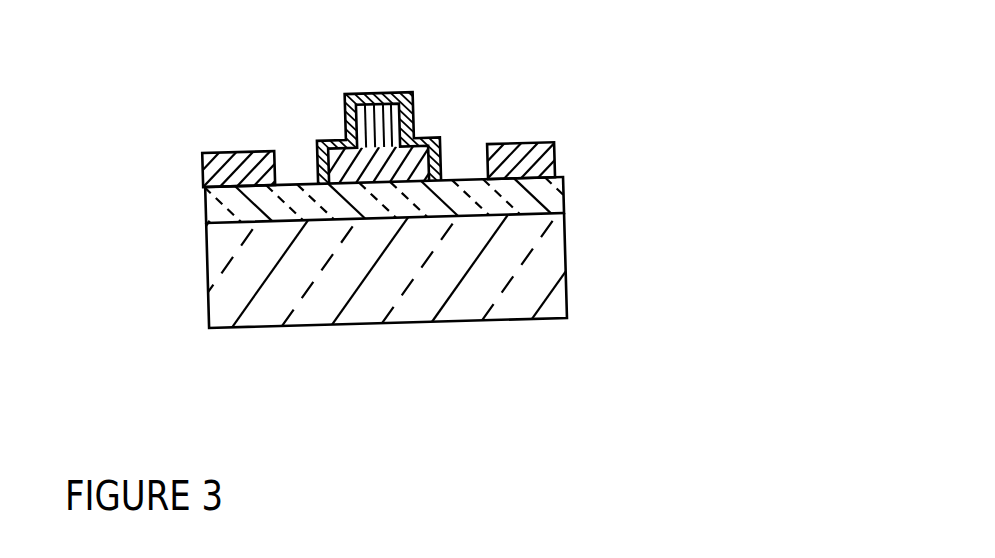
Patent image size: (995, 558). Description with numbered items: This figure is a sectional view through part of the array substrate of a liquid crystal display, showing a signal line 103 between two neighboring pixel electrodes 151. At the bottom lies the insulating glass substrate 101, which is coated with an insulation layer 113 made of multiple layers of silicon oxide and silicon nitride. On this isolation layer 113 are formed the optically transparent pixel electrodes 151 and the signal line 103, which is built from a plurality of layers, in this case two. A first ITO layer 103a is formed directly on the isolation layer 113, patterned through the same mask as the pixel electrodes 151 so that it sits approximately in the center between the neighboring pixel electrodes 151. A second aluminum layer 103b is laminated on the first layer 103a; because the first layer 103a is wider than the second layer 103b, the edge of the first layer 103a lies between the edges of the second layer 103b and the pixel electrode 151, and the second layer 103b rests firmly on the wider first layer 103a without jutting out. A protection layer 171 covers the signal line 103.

The glass substrate 101 is at (562, 277).
The insulation layer 113 is at (563, 197).
The pixel electrode 151 is at (214, 151).
The signal line 103 is at (385, 93).
The first ITO layer 103a is at (241, 85).
The second aluminum layer 103b is at (414, 104).
The protection layer 171 is at (350, 91).